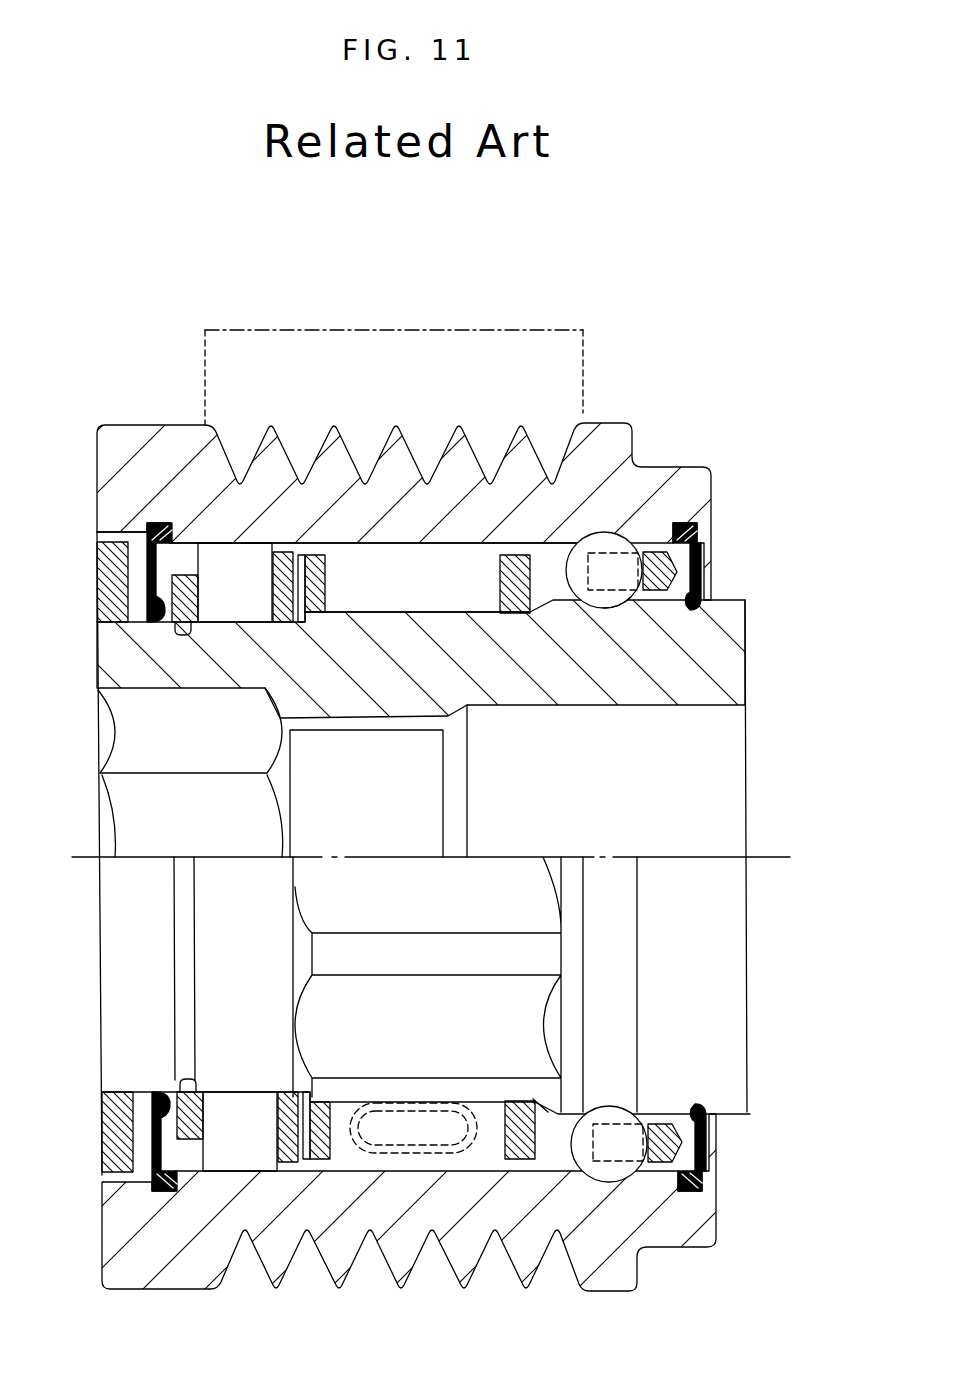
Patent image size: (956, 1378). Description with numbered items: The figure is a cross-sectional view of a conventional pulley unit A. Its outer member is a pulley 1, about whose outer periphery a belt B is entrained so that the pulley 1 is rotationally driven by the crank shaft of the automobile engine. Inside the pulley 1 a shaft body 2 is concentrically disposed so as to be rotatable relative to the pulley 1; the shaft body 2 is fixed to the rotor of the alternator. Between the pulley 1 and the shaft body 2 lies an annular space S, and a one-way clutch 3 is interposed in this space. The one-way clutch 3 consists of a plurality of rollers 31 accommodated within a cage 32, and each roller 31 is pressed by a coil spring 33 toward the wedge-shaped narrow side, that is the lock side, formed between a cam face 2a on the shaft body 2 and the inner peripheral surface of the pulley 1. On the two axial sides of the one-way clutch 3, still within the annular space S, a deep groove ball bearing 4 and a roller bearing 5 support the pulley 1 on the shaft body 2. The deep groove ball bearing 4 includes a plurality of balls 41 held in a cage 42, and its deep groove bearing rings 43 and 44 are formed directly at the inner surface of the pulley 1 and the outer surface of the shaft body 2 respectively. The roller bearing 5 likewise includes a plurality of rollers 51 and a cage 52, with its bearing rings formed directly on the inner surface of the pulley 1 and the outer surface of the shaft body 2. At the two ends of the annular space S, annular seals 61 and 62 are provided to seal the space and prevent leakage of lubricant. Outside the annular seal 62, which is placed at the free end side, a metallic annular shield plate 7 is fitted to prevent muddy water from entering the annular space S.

The pulley 1 is at (687, 485).
The shaft body 2 is at (730, 672).
The cam face 2a is at (400, 613).
The one-way clutch 3 is at (392, 538).
The roller 31 is at (445, 552).
The cage 32 is at (312, 570).
The coil spring 33 is at (392, 1155).
The deep groove ball bearing 4 is at (593, 528).
The ball 41 is at (605, 608).
The cage 42 is at (682, 542).
The deep groove bearing ring 43 is at (657, 560).
The deep groove bearing ring 44 is at (628, 608).
The roller bearing 5 is at (218, 540).
The roller 51 is at (246, 565).
The cage 52 is at (176, 632).
The annular seal 61 is at (703, 562).
The annular seal 62 is at (145, 571).
The metallic annular shield plate 7 is at (103, 587).
The annular space S is at (135, 528).
The pulley unit A is at (752, 367).
The belt B is at (548, 328).